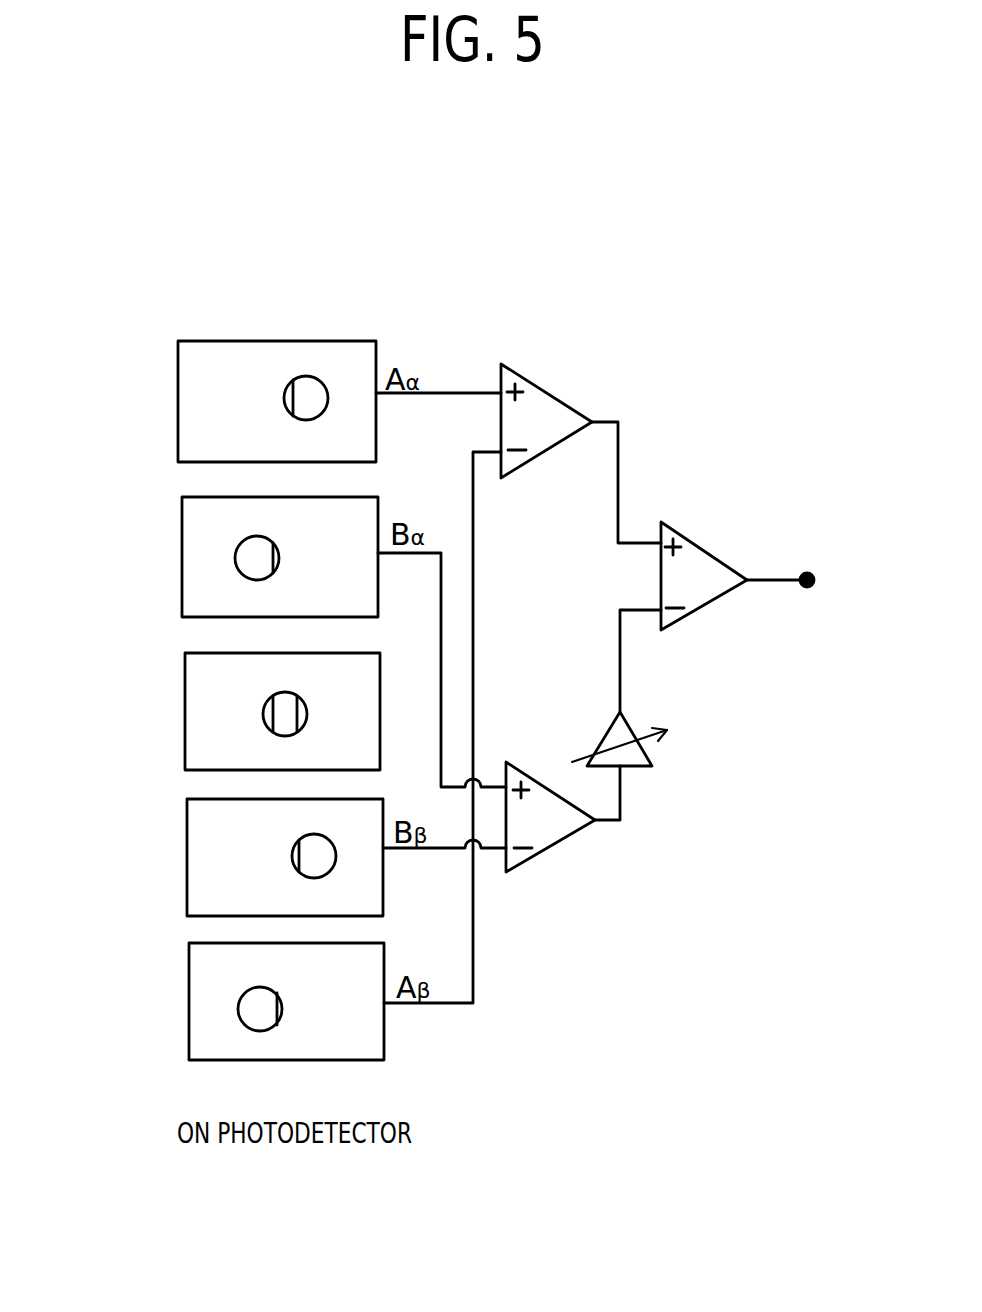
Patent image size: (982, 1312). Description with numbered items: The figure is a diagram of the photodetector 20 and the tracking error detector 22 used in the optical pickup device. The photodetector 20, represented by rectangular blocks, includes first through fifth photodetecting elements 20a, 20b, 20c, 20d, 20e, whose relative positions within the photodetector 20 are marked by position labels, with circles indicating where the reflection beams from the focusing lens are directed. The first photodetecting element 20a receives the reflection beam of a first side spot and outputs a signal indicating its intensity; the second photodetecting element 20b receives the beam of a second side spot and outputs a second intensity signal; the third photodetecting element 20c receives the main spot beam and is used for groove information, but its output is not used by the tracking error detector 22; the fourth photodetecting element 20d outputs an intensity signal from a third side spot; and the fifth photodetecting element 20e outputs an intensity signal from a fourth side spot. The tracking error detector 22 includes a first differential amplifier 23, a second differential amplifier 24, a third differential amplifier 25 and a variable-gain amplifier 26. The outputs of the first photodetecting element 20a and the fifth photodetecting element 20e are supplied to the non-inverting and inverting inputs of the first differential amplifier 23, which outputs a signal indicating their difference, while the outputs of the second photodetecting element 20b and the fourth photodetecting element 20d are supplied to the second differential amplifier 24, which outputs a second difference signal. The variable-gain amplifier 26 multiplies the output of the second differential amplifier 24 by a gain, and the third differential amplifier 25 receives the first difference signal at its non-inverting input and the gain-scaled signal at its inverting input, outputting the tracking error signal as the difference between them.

The photodetector 20 is at (323, 316).
The first photodetecting element 20a is at (178, 407).
The second photodetecting element 20b is at (182, 563).
The third photodetecting element 20c is at (185, 730).
The fourth photodetecting element 20d is at (187, 877).
The fifth photodetecting element 20e is at (189, 1019).
The tracking error detector 22 is at (638, 336).
The first differential amplifier 23 is at (553, 395).
The second differential amplifier 24 is at (535, 777).
The third differential amplifier 25 is at (695, 543).
The variable-gain amplifier 26 is at (647, 751).